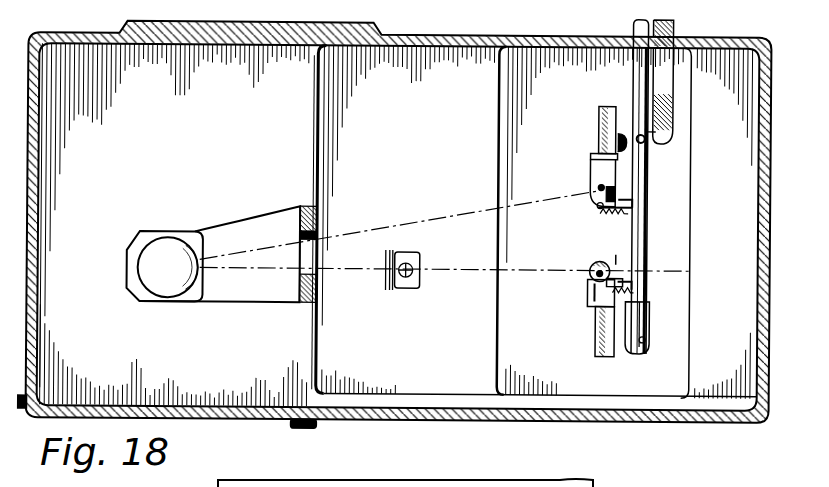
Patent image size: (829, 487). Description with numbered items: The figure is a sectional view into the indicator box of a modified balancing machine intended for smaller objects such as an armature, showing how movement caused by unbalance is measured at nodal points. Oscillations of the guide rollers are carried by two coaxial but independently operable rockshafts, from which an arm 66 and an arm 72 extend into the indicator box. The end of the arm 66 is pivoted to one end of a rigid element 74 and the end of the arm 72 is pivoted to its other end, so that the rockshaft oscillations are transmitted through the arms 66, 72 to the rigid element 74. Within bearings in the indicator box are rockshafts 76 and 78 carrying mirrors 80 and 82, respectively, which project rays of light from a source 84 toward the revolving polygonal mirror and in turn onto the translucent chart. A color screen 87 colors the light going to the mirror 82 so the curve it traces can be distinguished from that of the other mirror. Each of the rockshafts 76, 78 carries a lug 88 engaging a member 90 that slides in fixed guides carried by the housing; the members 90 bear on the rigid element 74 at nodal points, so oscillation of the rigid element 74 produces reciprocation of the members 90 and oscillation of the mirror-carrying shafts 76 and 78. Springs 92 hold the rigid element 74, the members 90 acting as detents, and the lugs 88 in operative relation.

The arm 66 is at (673, 26).
The arm 72 is at (631, 70).
The rigid element 74 is at (648, 230).
The rockshaft 76 is at (594, 270).
The rockshaft 78 is at (597, 186).
The mirror 80 is at (616, 262).
The mirror 82 is at (600, 182).
The light source 84 is at (163, 246).
The color screen 87 is at (388, 278).
The lug 88 is at (598, 204).
The member 90 is at (640, 200).
The spring 92 is at (612, 217).